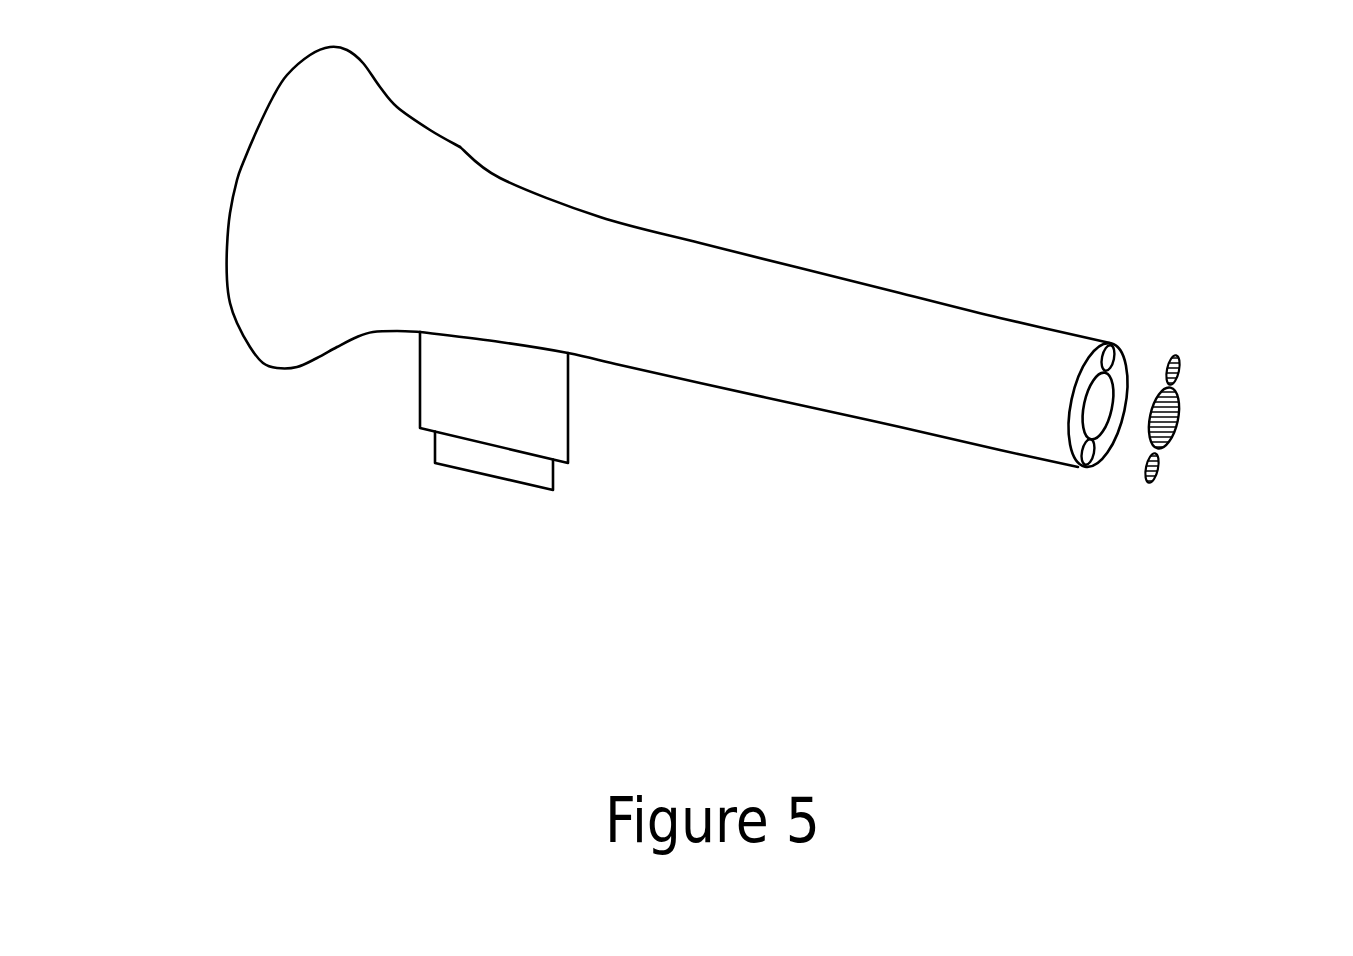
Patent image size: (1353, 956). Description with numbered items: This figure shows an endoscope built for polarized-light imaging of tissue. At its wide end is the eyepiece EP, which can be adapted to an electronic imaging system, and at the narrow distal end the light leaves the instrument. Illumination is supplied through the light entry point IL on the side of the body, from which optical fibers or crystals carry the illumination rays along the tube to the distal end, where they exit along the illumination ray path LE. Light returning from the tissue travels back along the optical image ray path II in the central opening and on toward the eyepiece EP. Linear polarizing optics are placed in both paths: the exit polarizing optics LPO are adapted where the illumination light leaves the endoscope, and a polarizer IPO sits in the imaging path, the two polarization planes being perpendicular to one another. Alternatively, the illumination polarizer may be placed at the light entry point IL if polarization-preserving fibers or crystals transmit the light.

The eyepiece EP is at (285, 75).
The light entry point IL is at (487, 522).
The optical image ray path II is at (1093, 402).
The illumination ray path LE is at (1113, 345).
The inner polarizer IPO is at (1180, 418).
The exit polarizing optics LPO is at (1180, 370).